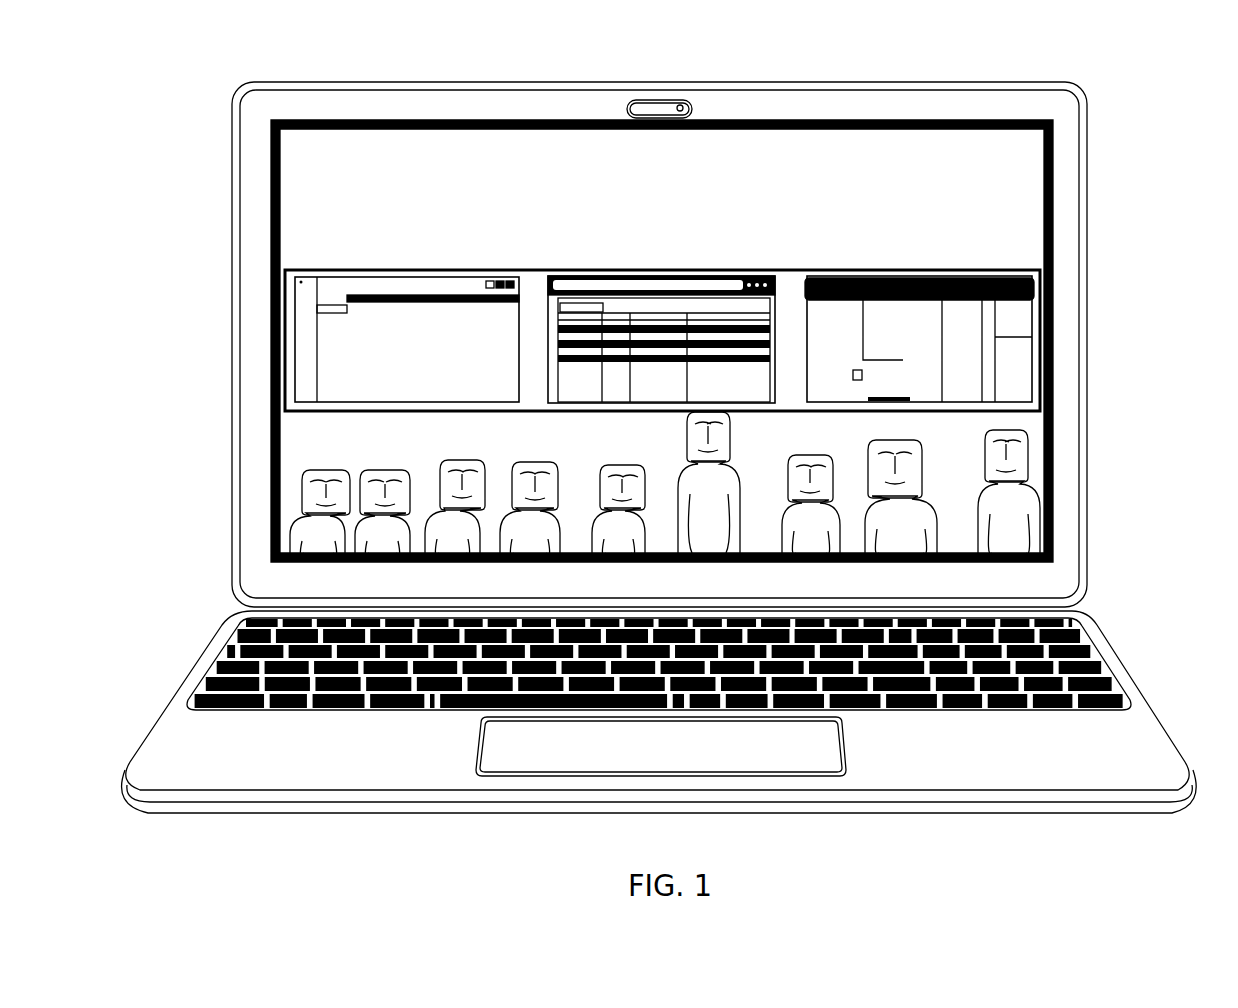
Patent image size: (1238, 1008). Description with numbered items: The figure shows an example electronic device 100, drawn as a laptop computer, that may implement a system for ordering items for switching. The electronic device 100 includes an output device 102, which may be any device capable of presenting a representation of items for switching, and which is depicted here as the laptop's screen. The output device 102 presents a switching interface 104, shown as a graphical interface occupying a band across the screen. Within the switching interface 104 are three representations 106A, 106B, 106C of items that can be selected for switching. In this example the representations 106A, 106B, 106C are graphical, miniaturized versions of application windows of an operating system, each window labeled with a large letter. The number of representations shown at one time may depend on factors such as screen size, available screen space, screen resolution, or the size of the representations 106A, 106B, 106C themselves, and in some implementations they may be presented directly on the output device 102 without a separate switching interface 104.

The electronic device 100 is at (292, 84).
The output device 102 is at (1023, 199).
The switching interface 104 is at (344, 412).
The representation 106A is at (377, 279).
The representation 106B is at (633, 279).
The representation 106C is at (957, 278).